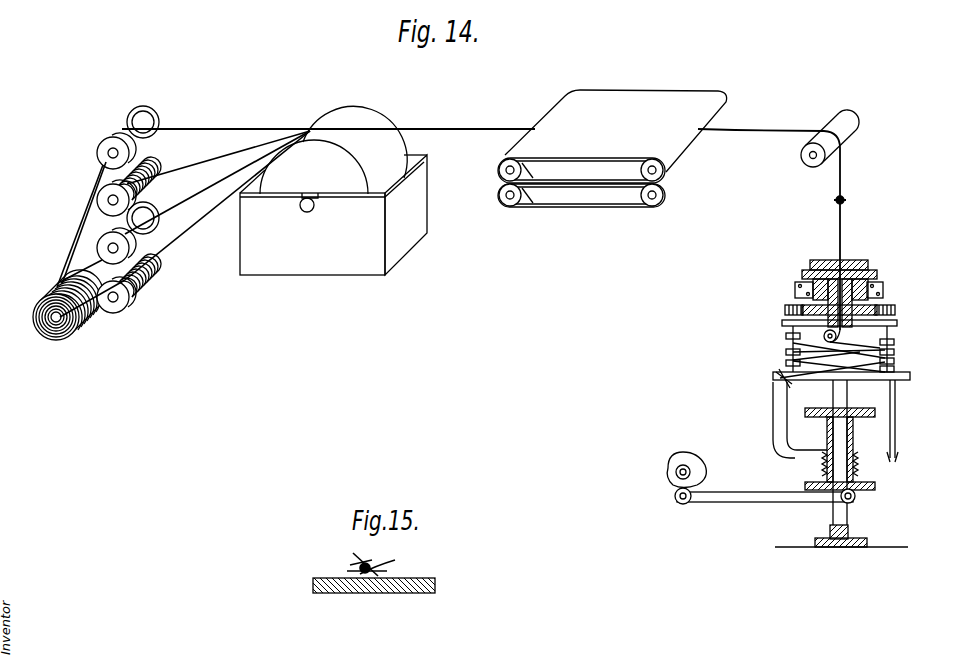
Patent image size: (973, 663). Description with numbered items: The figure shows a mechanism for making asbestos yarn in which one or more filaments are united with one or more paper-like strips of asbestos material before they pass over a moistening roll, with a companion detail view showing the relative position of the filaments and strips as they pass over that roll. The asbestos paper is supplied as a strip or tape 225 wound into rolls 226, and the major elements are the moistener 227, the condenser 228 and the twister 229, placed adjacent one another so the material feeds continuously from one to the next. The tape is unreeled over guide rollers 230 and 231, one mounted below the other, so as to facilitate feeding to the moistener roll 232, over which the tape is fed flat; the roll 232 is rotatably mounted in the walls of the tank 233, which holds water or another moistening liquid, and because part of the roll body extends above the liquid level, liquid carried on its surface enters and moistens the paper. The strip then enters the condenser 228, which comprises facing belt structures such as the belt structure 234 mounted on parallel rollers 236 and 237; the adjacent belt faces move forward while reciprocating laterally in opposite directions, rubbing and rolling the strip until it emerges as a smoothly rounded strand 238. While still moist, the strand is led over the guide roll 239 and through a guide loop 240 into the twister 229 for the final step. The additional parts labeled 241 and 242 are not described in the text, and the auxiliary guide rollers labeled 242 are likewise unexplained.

In FIG. 14, the strip or tape 225 is at (215, 128).
In FIG. 15, the strip or tape 225 is at (385, 566).
In FIG. 14, the rolls 226 is at (90, 305).
In FIG. 14, the moistener 227 is at (349, 283).
In FIG. 14, the condenser 228 is at (543, 103).
In FIG. 14, the twister 229 is at (908, 350).
In FIG. 14, the guide roller 230 is at (102, 247).
In FIG. 14, the guide roller 231 is at (100, 150).
In FIG. 14, the moistener roll 232 is at (353, 113).
In FIG. 15, the moistener roll 232 is at (340, 584).
In FIG. 14, the tank 233 is at (275, 268).
In FIG. 14, the belt structure 234 is at (660, 95).
In FIG. 14, the rollers 236 is at (499, 172).
In FIG. 14, the rollers 237 is at (663, 173).
In FIG. 14, the strand 238 is at (782, 128).
In FIG. 14, the guide roll 239 is at (855, 123).
In FIG. 14, the guide loop 240 is at (847, 200).
In FIG. 14, the thread 241 is at (184, 167).
In FIG. 15, the thread 241 is at (362, 564).
In FIG. 14, the rollers 242 is at (103, 197).